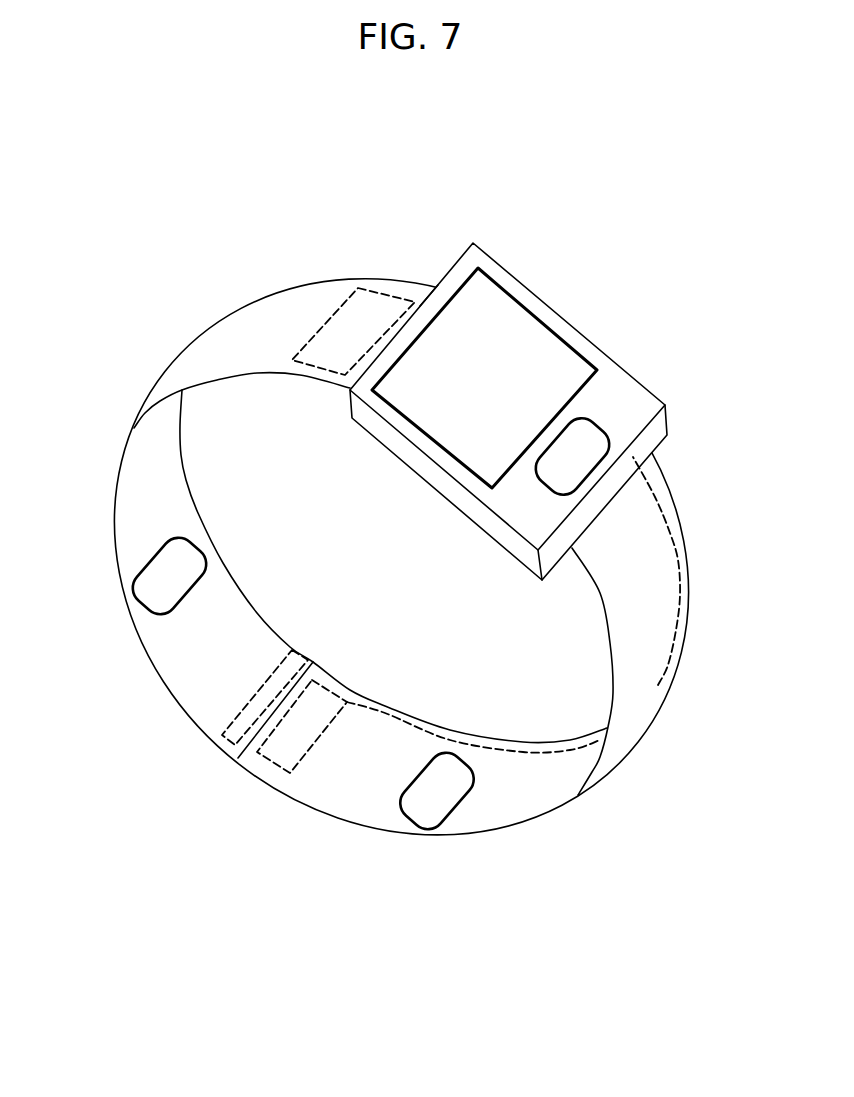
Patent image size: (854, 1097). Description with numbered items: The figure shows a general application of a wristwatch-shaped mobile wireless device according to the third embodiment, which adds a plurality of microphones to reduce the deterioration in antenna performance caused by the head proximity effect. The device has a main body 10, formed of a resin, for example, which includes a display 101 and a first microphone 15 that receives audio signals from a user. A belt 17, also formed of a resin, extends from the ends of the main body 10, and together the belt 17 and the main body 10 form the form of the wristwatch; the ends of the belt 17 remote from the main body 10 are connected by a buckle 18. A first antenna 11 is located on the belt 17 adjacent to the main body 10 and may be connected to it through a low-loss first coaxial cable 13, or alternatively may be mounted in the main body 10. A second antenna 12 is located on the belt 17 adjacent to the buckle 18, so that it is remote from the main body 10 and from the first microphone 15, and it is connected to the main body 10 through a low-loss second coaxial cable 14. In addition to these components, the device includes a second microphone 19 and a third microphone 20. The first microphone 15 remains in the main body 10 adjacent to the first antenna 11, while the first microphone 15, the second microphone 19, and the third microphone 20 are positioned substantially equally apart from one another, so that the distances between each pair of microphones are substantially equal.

The main body 10 is at (557, 311).
The display 101 is at (520, 327).
The first antenna 11 is at (369, 308).
The second antenna 12 is at (283, 757).
The first coaxial cable 13 is at (432, 312).
The second coaxial cable 14 is at (652, 503).
The first microphone 15 is at (587, 430).
The belt 17 is at (170, 642).
The buckle 18 is at (227, 747).
The second microphone 19 is at (145, 590).
The third microphone 20 is at (418, 817).